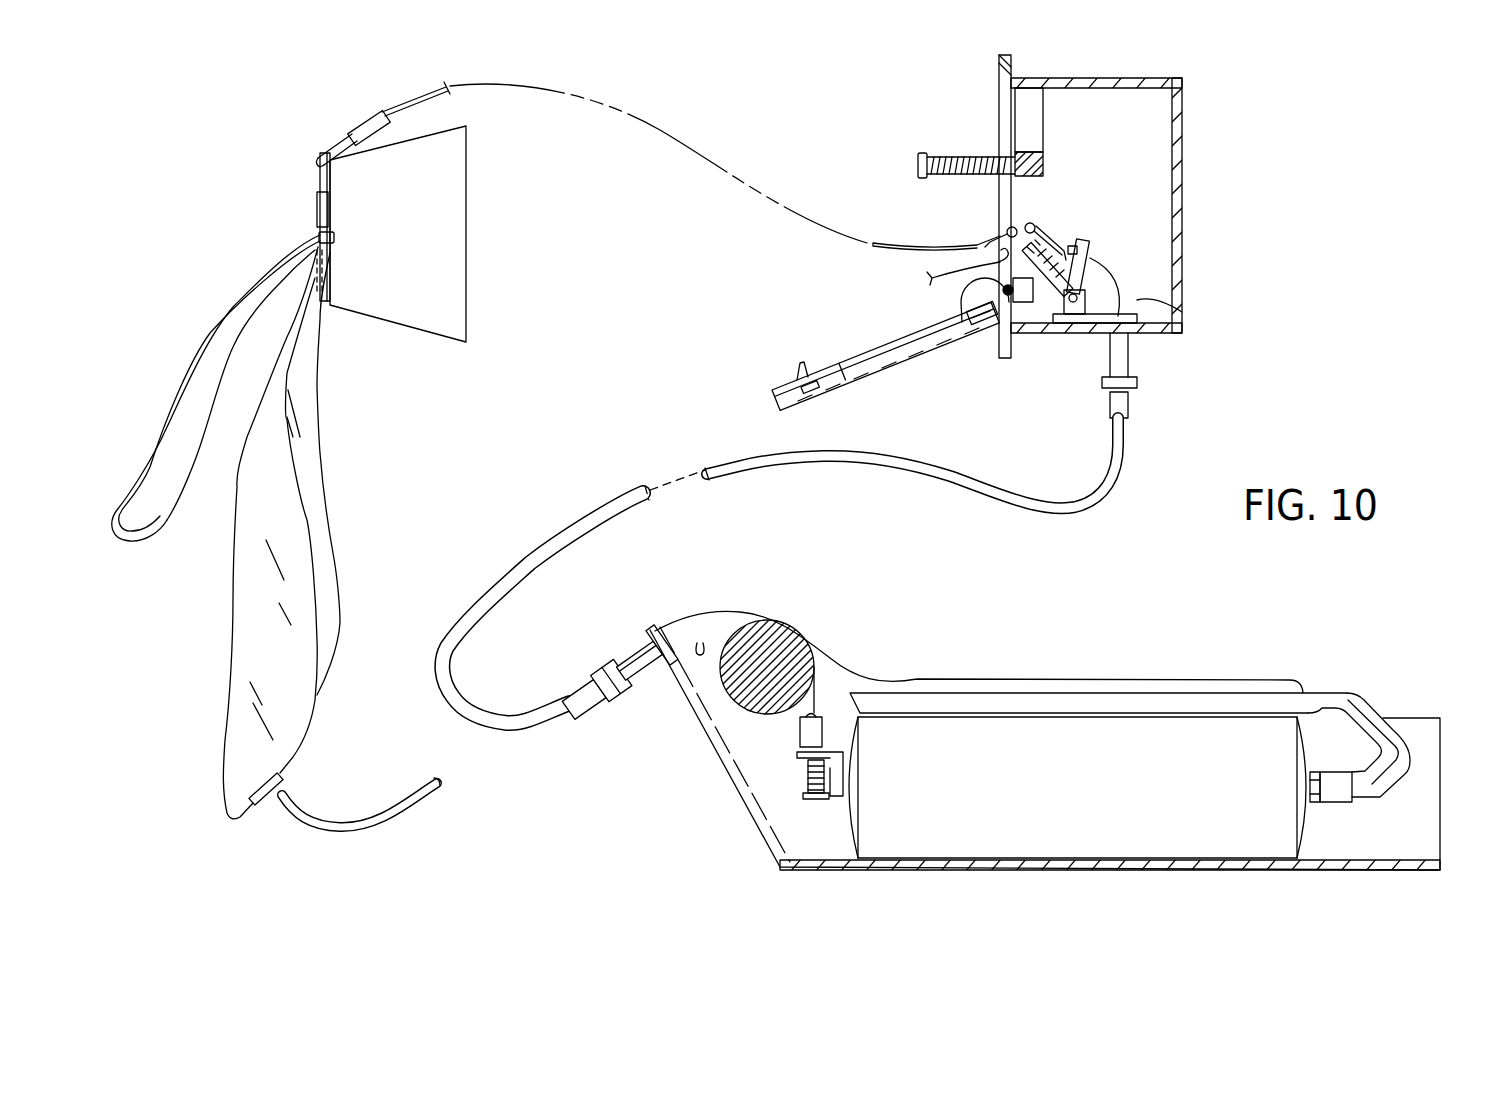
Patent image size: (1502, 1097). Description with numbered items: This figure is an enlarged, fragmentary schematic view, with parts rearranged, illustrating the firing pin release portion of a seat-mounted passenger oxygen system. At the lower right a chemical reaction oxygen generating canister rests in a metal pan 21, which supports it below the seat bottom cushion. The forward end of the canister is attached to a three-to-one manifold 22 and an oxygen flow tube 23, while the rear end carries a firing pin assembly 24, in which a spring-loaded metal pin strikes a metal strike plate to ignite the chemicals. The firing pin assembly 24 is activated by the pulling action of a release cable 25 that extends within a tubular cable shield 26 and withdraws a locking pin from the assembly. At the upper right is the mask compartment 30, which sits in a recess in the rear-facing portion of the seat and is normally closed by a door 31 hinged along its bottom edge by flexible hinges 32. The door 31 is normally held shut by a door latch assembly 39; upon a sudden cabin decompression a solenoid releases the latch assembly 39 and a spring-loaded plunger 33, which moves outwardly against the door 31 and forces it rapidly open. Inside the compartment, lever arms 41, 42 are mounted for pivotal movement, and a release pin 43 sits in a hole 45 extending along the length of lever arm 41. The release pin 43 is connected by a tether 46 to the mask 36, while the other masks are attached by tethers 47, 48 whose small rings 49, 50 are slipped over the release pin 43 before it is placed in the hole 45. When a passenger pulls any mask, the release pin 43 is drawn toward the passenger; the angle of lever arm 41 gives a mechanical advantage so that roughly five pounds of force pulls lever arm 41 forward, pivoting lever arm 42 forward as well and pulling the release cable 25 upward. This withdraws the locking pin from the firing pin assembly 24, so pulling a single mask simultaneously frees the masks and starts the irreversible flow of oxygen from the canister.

The metal pan 21 is at (757, 835).
The three-to-one manifold 22 is at (1395, 762).
The oxygen flow tube 23 is at (1035, 705).
The firing pin assembly 24 is at (800, 750).
The release cable 25 is at (1182, 311).
The tubular cable shield 26 is at (1130, 468).
The mask compartment 30 is at (1190, 126).
The door 31 is at (880, 360).
The flexible hinges 32 is at (980, 326).
The spring-loaded plunger 33 is at (920, 152).
The mask 36 is at (452, 298).
The door latch assembly 39 is at (798, 370).
The lever arm 41 is at (1055, 262).
The lever arm 42 is at (1093, 243).
The release pin 43 is at (1000, 226).
The hole 45 is at (1063, 233).
The tether 46 is at (897, 242).
The tether 47 is at (1070, 246).
The tether 48 is at (935, 280).
The ring 49 is at (1036, 222).
The ring 50 is at (1021, 304).